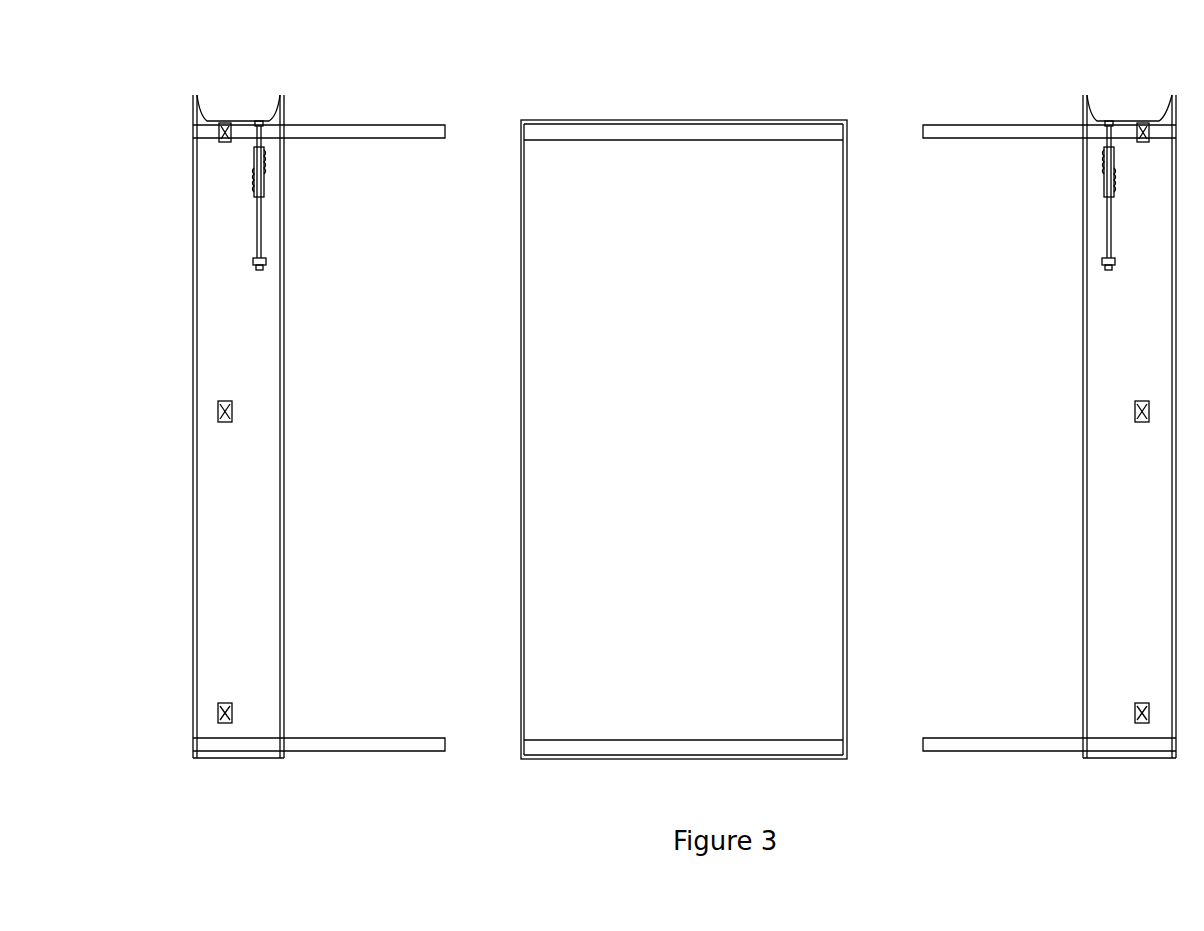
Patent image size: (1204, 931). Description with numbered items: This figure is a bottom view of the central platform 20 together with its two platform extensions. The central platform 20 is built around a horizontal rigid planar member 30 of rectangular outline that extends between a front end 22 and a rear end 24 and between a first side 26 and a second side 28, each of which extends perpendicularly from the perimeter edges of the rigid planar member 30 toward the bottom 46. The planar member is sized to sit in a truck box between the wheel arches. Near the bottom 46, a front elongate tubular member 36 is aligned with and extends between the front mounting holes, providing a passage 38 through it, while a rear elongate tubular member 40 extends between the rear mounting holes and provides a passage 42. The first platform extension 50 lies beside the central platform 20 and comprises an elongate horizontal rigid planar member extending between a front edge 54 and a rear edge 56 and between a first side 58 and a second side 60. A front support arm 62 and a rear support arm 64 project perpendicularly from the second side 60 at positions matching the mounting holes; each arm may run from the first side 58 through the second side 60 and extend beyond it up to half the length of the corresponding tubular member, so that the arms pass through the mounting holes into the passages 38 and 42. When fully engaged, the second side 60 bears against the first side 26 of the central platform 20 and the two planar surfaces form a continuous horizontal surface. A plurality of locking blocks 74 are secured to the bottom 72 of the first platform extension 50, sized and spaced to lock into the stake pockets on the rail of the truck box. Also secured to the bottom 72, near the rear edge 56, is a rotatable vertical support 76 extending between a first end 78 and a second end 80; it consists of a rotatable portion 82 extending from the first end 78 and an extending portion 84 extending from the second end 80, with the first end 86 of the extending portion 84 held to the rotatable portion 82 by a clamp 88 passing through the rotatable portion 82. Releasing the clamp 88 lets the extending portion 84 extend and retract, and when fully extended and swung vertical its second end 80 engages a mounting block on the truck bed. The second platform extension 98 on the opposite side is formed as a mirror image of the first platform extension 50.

The central platform 20 is at (670, 78).
The front end 22 is at (700, 760).
The rear end 24 is at (723, 120).
The first side 26 is at (521, 440).
The second side 28 is at (848, 440).
The horizontal rigid planar member 30 is at (822, 235).
The front elongate tubular member 36 is at (781, 745).
The passage 38 is at (508, 747).
The rear elongate tubular member 40 is at (778, 133).
The passage 42 is at (508, 130).
The bottom 46 is at (550, 198).
The first platform extension 50 is at (241, 72).
The front edge 54 is at (242, 759).
The rear edge 56 is at (233, 120).
The first side 58 is at (192, 502).
The second side 60 is at (284, 605).
The front support arm 62 is at (360, 752).
The rear support arm 64 is at (365, 125).
The bottom 72 is at (207, 608).
The locking blocks 74 is at (223, 142).
The rotatable vertical support 76 is at (264, 242).
The first end 78 is at (258, 122).
The second end 80 is at (262, 272).
The rotatable portion 82 is at (254, 180).
The extending portion 84 is at (256, 250).
The first end 86 is at (263, 188).
The clamp 88 is at (264, 172).
The second platform extension 98 is at (1120, 75).